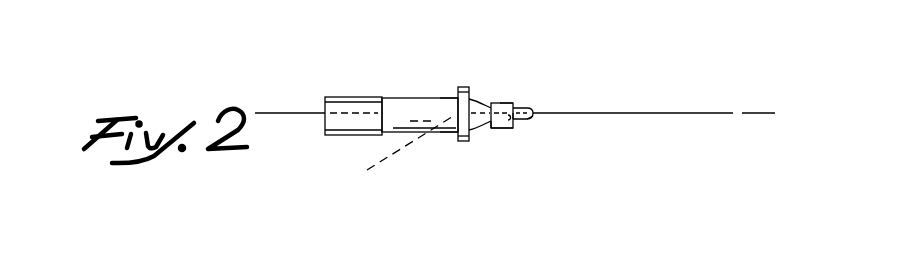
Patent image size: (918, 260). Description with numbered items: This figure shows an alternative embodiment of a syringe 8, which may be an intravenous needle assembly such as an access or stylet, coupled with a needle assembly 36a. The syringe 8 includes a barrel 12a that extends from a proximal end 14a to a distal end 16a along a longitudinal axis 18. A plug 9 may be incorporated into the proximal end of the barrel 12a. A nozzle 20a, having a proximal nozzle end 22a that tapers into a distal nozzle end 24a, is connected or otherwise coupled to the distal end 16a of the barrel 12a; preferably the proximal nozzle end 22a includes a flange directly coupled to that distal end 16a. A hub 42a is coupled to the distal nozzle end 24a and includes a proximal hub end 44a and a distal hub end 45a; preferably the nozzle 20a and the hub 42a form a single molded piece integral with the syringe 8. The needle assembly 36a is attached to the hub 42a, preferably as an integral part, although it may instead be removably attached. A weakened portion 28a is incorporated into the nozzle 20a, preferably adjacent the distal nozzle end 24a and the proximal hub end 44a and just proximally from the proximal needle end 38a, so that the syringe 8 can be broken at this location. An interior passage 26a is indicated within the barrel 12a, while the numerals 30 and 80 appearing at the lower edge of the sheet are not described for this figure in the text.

The syringe 8 is at (370, 63).
The plug 9 is at (325, 122).
The barrel 12a is at (410, 98).
The proximal end 14a is at (332, 135).
The distal end 16a is at (450, 132).
The wire 18 is at (757, 113).
The nozzle 20a is at (480, 99).
The proximal nozzle end 22a is at (465, 141).
The distal nozzle end 24a is at (495, 103).
The internal passage 26a is at (399, 160).
The weakened portion 28a is at (481, 122).
The element 30 is at (303, 259).
The needle assembly 36a is at (562, 102).
The proximal needle end 38a is at (502, 103).
The hub 42a is at (512, 130).
The proximal hub end 44a is at (513, 132).
The distal hub end 45a is at (508, 130).
The element 80 is at (213, 250).